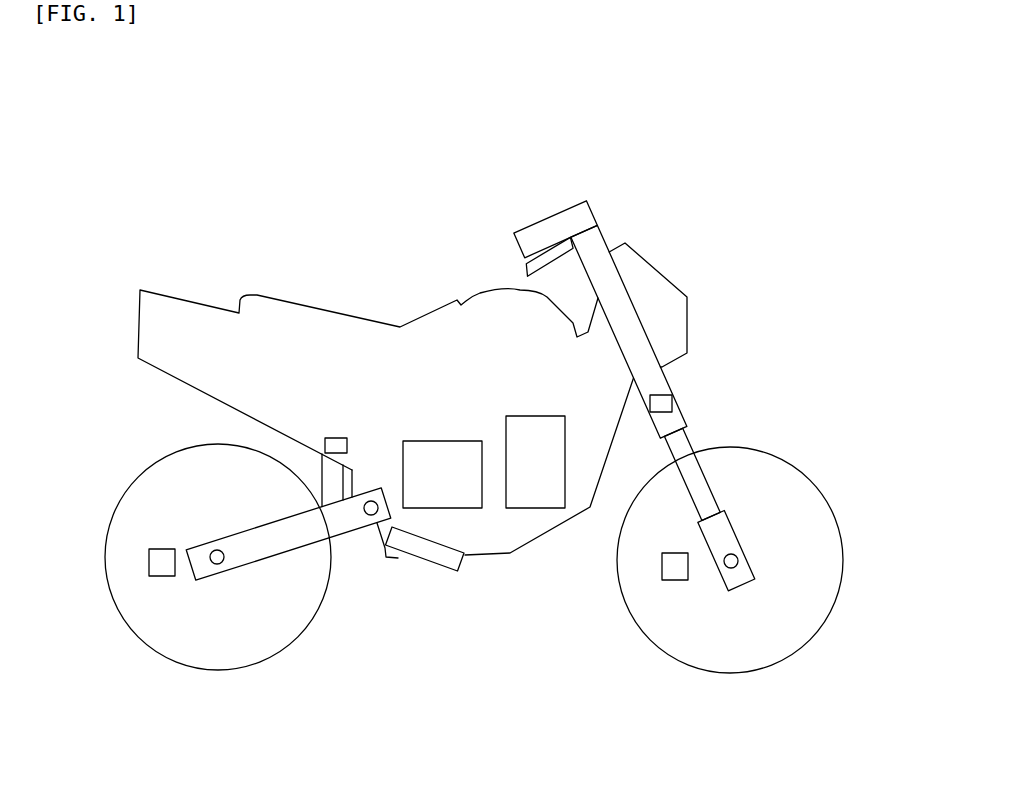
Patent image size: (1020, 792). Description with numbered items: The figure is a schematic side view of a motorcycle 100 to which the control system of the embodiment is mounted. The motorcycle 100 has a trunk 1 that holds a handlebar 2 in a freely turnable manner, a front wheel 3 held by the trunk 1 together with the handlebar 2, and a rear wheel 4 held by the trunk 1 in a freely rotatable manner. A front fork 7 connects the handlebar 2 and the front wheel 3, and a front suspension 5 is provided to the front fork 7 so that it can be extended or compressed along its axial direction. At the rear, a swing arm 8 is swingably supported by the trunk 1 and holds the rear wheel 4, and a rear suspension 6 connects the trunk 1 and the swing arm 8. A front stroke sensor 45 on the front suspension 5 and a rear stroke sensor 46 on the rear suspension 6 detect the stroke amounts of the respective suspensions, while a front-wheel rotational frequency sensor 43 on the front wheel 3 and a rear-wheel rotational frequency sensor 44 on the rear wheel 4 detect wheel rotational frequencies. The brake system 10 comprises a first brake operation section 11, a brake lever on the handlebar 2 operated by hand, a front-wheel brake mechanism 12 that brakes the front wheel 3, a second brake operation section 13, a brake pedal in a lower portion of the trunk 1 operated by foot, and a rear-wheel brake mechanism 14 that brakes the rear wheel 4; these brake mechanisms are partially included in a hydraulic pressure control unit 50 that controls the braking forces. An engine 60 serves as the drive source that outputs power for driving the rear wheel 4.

The motorcycle 100 is at (833, 68).
The trunk 1 is at (318, 327).
The handlebar 2 is at (547, 226).
The front wheel 3 is at (733, 673).
The rear wheel 4 is at (218, 672).
The front suspension 5 is at (692, 447).
The rear suspension 6 is at (337, 492).
The front fork 7 is at (684, 415).
The swing arm 8 is at (262, 546).
The brake system 10 is at (742, 407).
The first brake operation section 11 is at (533, 270).
The front-wheel brake mechanism 12 is at (746, 531).
The second brake operation section 13 is at (437, 573).
The rear-wheel brake mechanism 14 is at (198, 537).
The front-wheel rotational frequency sensor 43 is at (662, 568).
The rear-wheel rotational frequency sensor 44 is at (155, 562).
The front stroke sensor 45 is at (668, 395).
The rear stroke sensor 46 is at (335, 437).
The hydraulic pressure control unit 50 is at (427, 438).
The engine 60 is at (537, 498).